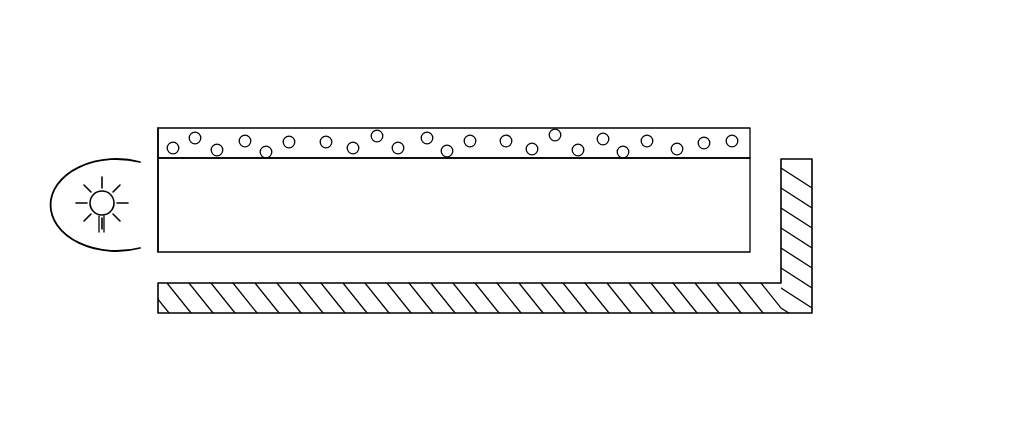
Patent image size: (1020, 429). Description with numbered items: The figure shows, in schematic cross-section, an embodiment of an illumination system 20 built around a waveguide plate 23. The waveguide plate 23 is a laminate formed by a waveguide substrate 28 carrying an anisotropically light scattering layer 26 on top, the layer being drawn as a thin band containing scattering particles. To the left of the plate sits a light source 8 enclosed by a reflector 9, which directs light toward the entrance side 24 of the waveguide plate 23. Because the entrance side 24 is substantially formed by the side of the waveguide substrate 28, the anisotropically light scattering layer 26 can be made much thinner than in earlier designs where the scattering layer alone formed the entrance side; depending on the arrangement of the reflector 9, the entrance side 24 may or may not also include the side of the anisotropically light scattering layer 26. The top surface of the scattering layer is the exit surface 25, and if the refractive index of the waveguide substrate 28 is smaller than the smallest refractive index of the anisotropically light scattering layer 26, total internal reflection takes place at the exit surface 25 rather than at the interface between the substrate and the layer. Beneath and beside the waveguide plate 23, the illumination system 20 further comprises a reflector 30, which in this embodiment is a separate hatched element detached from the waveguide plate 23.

The illumination system 20 is at (128, 115).
The waveguide plate 23 is at (865, 110).
The entrance side 24 is at (156, 237).
The exit surface 25 is at (262, 127).
The anisotropically light scattering layer 26 is at (745, 136).
The waveguide substrate 28 is at (745, 172).
The reflector 30 is at (800, 265).
The light source 8 is at (103, 232).
The reflector 9 is at (58, 228).